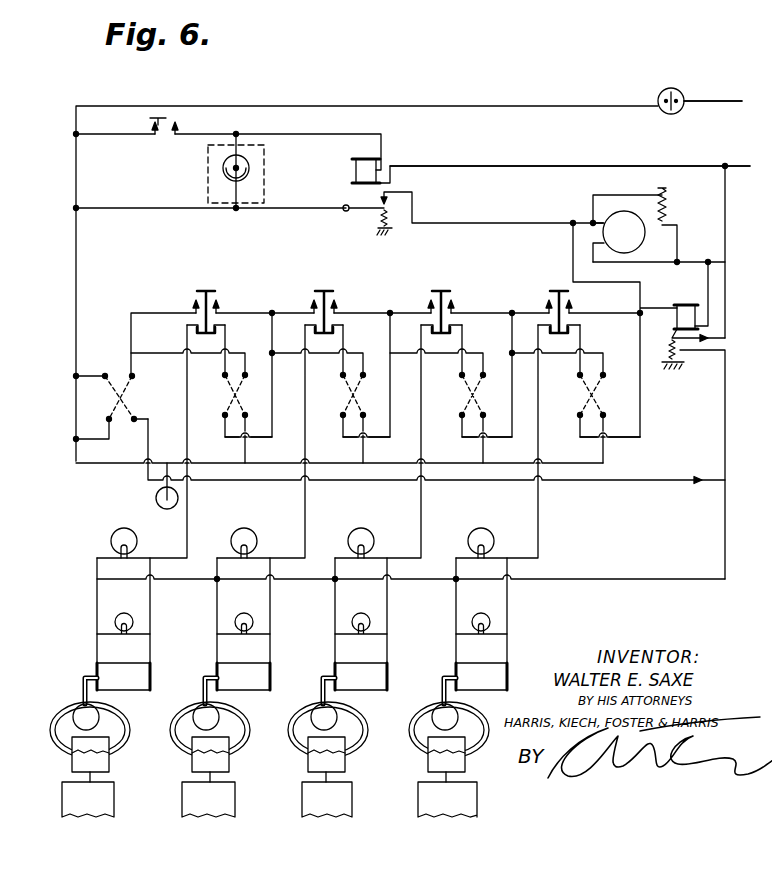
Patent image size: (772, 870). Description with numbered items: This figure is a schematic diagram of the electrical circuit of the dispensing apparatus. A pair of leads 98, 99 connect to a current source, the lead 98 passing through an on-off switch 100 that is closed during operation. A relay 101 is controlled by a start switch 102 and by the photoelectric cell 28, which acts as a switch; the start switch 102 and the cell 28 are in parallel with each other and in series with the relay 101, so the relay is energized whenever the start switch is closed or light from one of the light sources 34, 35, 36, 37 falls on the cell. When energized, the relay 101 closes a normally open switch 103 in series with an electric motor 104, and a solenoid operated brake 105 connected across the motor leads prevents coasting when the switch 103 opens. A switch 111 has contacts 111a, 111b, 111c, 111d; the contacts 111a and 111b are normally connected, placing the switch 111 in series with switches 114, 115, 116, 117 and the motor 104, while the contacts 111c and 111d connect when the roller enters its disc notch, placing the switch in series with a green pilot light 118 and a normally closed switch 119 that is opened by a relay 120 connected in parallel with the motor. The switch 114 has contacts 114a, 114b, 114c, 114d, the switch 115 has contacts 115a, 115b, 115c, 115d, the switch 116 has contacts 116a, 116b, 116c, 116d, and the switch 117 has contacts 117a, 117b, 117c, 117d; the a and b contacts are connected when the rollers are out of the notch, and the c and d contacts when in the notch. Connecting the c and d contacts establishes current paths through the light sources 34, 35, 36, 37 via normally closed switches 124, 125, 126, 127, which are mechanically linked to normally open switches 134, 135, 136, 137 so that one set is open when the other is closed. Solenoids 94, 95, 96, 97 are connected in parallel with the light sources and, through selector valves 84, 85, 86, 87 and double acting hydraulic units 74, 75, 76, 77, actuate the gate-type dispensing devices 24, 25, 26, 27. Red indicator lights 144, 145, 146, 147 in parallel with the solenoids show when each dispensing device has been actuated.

The lead 98 is at (742, 100).
The lead 99 is at (740, 168).
The on-off switch 100 is at (677, 94).
The relay 101 is at (379, 170).
The start switch 102 is at (180, 125).
The normally open switch 103 is at (360, 211).
The electric motor 104 is at (638, 242).
The solenoid operated brake 105 is at (669, 215).
The photoelectric cell 28 is at (229, 181).
The switch 111 is at (120, 362).
The contact 111a is at (96, 432).
The contact 111b is at (154, 384).
The contact 111c is at (104, 380).
The contact 111d is at (156, 409).
The switch 114 is at (239, 348).
The contact 114a is at (224, 420).
The contact 114b is at (258, 378).
The contact 114c is at (224, 380).
The contact 114d is at (246, 420).
The switch 115 is at (357, 348).
The contact 115a is at (342, 420).
The contact 115b is at (376, 378).
The contact 115c is at (342, 380).
The contact 115d is at (364, 420).
The switch 116 is at (475, 348).
The contact 116a is at (461, 418).
The contact 116b is at (500, 372).
The contact 116c is at (461, 380).
The contact 116d is at (484, 417).
The switch 117 is at (607, 348).
The contact 117a is at (579, 418).
The contact 117b is at (620, 367).
The contact 117c is at (579, 378).
The contact 117d is at (622, 410).
The pilot light 118 is at (155, 501).
The normally closed switch 119 is at (685, 349).
The relay 120 is at (694, 322).
The normally closed switch 124 is at (187, 329).
The normally closed switch 125 is at (305, 329).
The normally closed switch 126 is at (421, 329).
The normally closed switch 127 is at (538, 329).
The normally open switch 134 is at (214, 296).
The normally open switch 135 is at (332, 296).
The normally open switch 136 is at (449, 296).
The normally open switch 137 is at (567, 296).
The light source 34 is at (137, 541).
The light source 35 is at (257, 541).
The light source 36 is at (374, 540).
The light source 37 is at (494, 540).
The indicator light 144 is at (133, 623).
The indicator light 145 is at (253, 623).
The indicator light 146 is at (370, 623).
The indicator light 147 is at (490, 621).
The solenoid 94 is at (150, 680).
The solenoid 95 is at (268, 672).
The solenoid 96 is at (385, 672).
The solenoid 97 is at (503, 669).
The selector valve 84 is at (58, 721).
The selector valve 85 is at (180, 719).
The selector valve 86 is at (300, 719).
The selector valve 87 is at (420, 719).
The double acting hydraulic unit 74 is at (72, 766).
The double acting hydraulic unit 75 is at (192, 766).
The double acting hydraulic unit 76 is at (310, 766).
The double acting hydraulic unit 77 is at (430, 764).
The dispensing device 24 is at (63, 804).
The dispensing device 25 is at (184, 805).
The dispensing device 26 is at (302, 805).
The dispensing device 27 is at (420, 805).